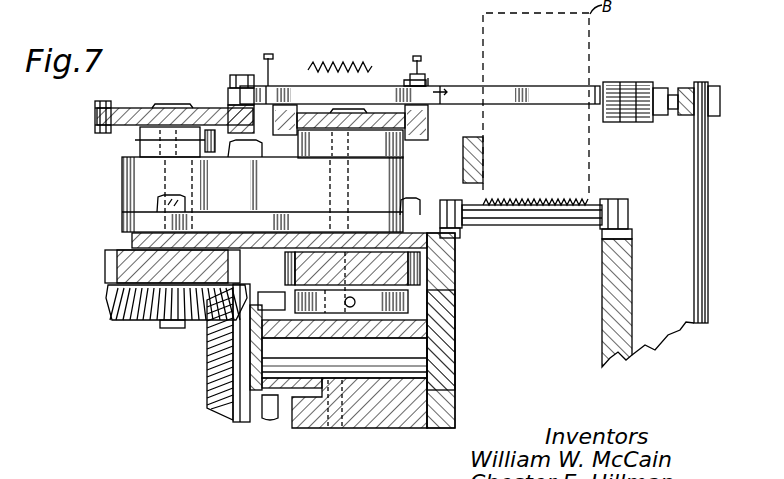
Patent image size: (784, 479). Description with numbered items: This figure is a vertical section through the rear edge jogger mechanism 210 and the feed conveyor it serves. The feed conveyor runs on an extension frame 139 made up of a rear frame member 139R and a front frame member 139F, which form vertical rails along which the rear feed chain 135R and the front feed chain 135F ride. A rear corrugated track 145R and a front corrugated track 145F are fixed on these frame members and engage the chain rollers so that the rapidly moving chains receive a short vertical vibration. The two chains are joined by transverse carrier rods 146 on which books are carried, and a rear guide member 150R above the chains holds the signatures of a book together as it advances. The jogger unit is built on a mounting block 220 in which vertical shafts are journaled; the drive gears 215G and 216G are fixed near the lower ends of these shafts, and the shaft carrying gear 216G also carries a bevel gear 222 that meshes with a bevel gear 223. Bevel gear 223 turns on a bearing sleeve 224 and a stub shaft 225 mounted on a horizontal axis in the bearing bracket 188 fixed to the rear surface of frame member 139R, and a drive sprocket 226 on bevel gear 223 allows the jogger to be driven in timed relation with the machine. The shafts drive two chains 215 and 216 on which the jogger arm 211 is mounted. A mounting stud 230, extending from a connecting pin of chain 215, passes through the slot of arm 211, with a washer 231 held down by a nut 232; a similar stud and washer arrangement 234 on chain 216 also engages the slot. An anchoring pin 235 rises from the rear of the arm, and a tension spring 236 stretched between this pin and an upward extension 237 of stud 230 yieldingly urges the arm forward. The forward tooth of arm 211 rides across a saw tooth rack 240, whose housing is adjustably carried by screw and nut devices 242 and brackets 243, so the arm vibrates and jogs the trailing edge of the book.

The chain 216 is at (95, 128).
The stud and washer arrangement 234 is at (240, 75).
The mounting bolt or stud 230 is at (440, 88).
The jogger arm 211 is at (523, 88).
The nut 232 is at (437, 70).
The rear edge jogger mechanism 210 is at (434, 72).
The anchoring pin 235 is at (268, 54).
The tension spring 236 is at (312, 62).
The upward extension of the stud 237 is at (417, 56).
The washer 231 is at (404, 82).
The mounting block 220 is at (130, 180).
The drive gear 216G is at (105, 257).
The bevel gear 222 is at (128, 318).
The bevel gear 223 is at (207, 392).
The drive sprocket 226 is at (262, 410).
The drive gear 215G is at (440, 278).
The bearing sleeve 224 is at (312, 395).
The stub shaft 225 is at (368, 392).
The bearing bracket 188 is at (395, 404).
The chain 215 is at (432, 140).
The rear frame member 139R is at (458, 338).
The extension frame 139 is at (467, 382).
The rear guide member 150R is at (463, 150).
The transverse carrier rod 146 is at (528, 226).
The rear feed chain 135R is at (448, 200).
The front feed chain 135F is at (624, 199).
The rear corrugated track 145R is at (458, 236).
The front corrugated track 145F is at (604, 236).
The front frame member 139F is at (606, 314).
The saw tooth rack 240 is at (603, 82).
The screw and nut device 242 is at (674, 88).
The bracket 243 is at (700, 142).